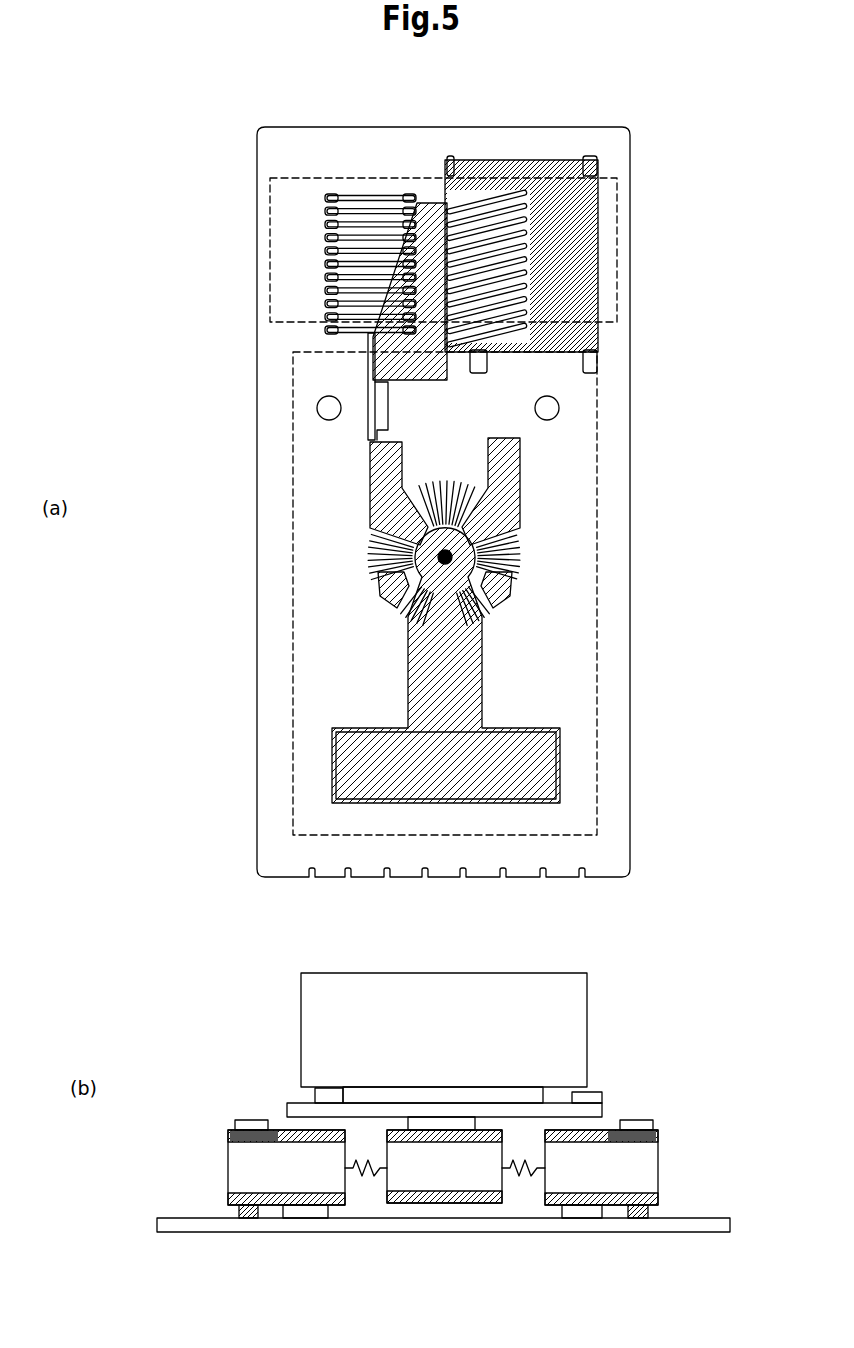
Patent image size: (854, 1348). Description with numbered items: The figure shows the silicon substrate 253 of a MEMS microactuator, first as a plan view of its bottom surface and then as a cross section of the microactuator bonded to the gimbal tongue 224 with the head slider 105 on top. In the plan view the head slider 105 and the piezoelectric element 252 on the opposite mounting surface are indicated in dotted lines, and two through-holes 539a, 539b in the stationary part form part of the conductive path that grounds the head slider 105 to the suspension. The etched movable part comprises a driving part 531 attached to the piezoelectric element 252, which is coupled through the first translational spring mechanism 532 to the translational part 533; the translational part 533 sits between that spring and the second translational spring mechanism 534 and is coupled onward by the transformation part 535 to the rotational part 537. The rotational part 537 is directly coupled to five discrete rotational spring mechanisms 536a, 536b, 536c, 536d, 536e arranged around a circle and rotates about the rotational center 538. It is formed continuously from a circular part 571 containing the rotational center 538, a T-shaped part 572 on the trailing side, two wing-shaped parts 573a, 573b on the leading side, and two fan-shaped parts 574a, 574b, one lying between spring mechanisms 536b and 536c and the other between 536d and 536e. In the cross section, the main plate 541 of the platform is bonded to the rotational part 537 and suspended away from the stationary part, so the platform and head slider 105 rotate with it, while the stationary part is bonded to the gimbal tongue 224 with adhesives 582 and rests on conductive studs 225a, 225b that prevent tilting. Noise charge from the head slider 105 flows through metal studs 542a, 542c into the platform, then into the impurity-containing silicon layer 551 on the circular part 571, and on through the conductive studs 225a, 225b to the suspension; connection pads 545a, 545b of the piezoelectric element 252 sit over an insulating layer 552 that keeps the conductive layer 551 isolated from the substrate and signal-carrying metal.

The head slider 105 is at (597, 553).
The gimbal tongue 224 is at (396, 1232).
The conductive stud 225a is at (648, 1220).
The conductive stud 225b is at (266, 1218).
The piezoelectric element 252 is at (617, 250).
The silicon substrate 253 is at (597, 490).
The driving part 531 is at (540, 168).
The first translational spring mechanism 532 is at (483, 240).
The translational part 533 is at (425, 257).
The second translational spring mechanism 534 is at (357, 236).
The transformation part 535 is at (378, 415).
The first rotational spring mechanism 536a is at (440, 485).
The second rotational spring mechanism 536b is at (518, 558).
The third rotational spring mechanism 536c is at (493, 613).
The fourth rotational spring mechanism 536d is at (395, 613).
The fifth rotational spring mechanism 536e is at (372, 555).
The rotational part 537 is at (394, 700).
The rotational center 538 is at (445, 562).
The through-hole 539a is at (559, 408).
The through-hole 539b is at (317, 410).
The main plate 541 is at (443, 1130).
The stud 542a is at (575, 1097).
The stud 542c is at (315, 1097).
The connection pad 545a is at (658, 1125).
The connection pad 545b is at (240, 1127).
The impurity-containing silicon layer 551 is at (443, 1130).
The insulating layer 552 is at (658, 1133).
The circular part 571 is at (442, 851).
The T-shaped part 572 is at (533, 760).
The wing-shaped part 573a is at (518, 487).
The wing-shaped part 573b is at (380, 470).
The fan-shaped part 574a is at (510, 590).
The fan-shaped part 574b is at (380, 587).
The adhesive 582 is at (330, 1217).